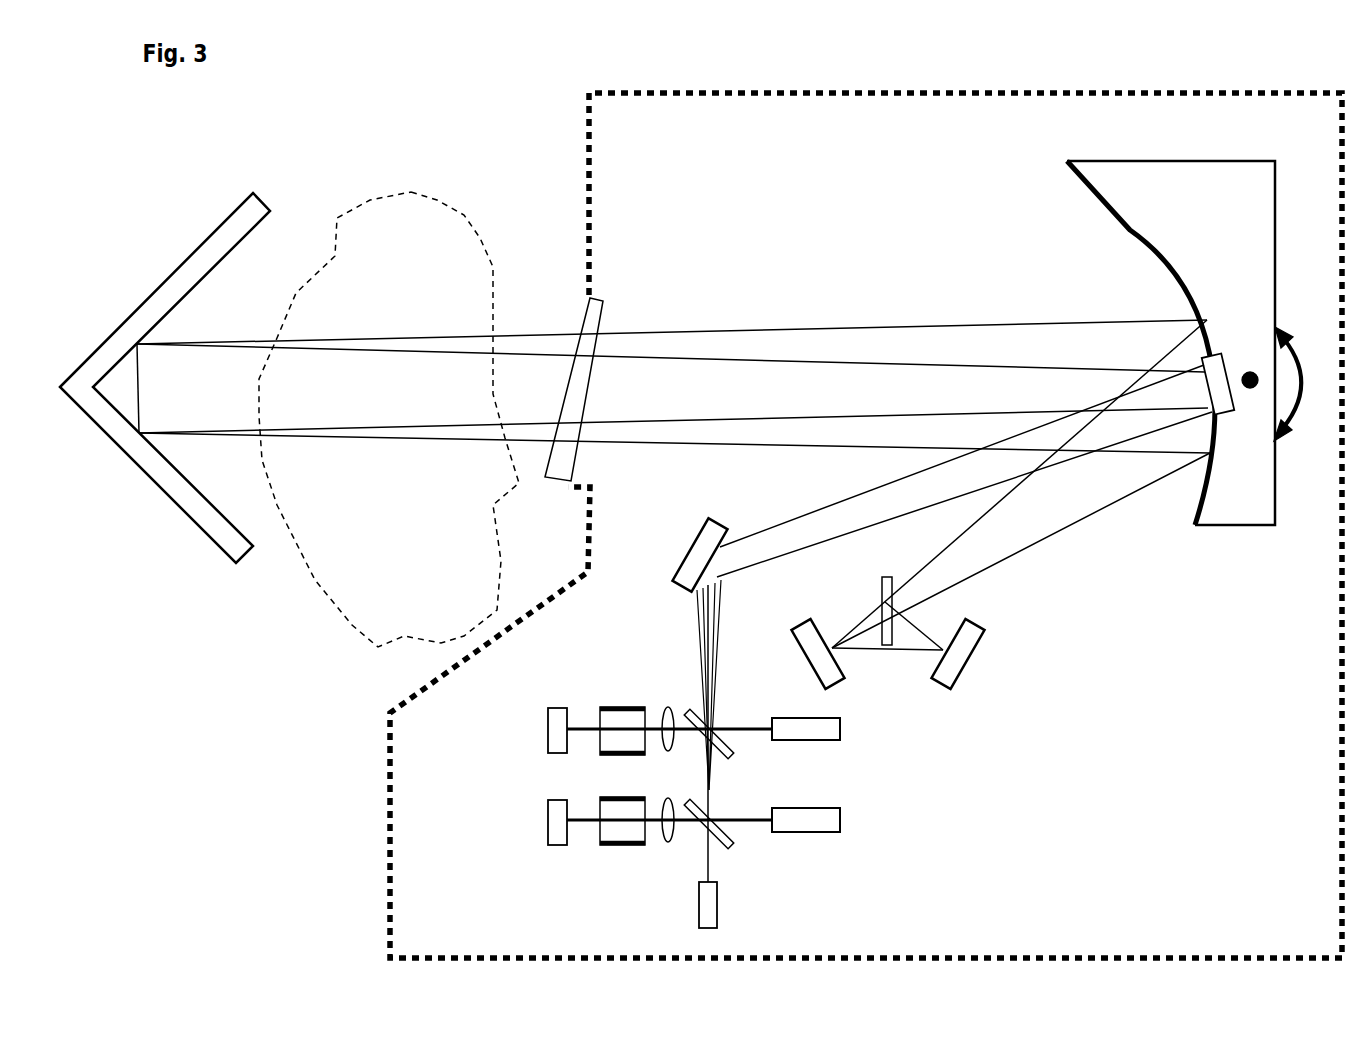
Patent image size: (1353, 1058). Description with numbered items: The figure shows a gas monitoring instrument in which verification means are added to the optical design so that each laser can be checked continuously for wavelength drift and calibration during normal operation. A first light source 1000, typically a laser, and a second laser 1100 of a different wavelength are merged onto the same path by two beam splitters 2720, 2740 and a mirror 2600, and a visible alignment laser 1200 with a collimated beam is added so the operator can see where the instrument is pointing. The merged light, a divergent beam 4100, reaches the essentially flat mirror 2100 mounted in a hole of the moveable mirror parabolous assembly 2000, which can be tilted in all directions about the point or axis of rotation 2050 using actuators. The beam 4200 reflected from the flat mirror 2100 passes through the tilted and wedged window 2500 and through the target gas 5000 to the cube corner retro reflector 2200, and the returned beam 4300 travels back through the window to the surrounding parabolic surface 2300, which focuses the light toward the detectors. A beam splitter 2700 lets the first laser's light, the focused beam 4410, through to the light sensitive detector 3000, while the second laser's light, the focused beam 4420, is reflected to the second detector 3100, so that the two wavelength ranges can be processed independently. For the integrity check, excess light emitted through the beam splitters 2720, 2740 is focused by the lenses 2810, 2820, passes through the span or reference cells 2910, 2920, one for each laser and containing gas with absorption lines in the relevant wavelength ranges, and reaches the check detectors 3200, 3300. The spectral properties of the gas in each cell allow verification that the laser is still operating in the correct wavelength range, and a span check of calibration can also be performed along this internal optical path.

The light source 1000 is at (806, 745).
The second laser 1100 is at (806, 838).
The alignment laser 1200 is at (741, 905).
The mirror parabolous assembly 2000 is at (1171, 326).
The point or axis of rotation 2050 is at (1245, 372).
The flat mirror 2100 is at (1212, 490).
The retro reflector 2200 is at (165, 378).
The parabolic surface 2300 is at (1124, 343).
The window 2500 is at (558, 484).
The mirror 2600 is at (676, 554).
The beam splitter 2700 is at (887, 596).
The first beam splitter 2720 is at (690, 707).
The second beam splitter 2740 is at (641, 863).
The first lens 2810 is at (660, 700).
The second lens 2820 is at (584, 850).
The first span or reference cell 2910 is at (543, 714).
The second span or reference cell 2920 is at (597, 847).
The light sensitive detector 3000 is at (811, 640).
The second detector 3100 is at (977, 639).
The first check detector 3200 is at (548, 714).
The second check detector 3300 is at (548, 812).
The divergent beam 4100 is at (964, 471).
The beam reflected by flat mirror 4200 is at (672, 341).
The beam reflected from cube corner 4300 is at (673, 351).
The beam focused onto first detector 4410 is at (853, 640).
The beam focused onto second detector 4420 is at (1021, 623).
The target gas 5000 is at (389, 412).